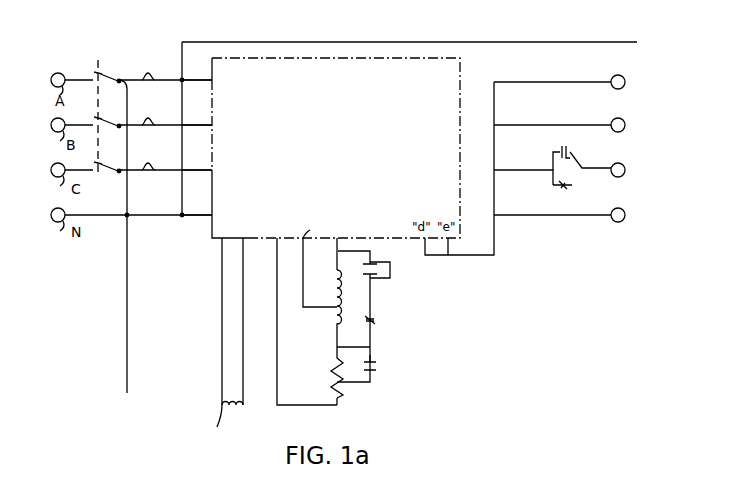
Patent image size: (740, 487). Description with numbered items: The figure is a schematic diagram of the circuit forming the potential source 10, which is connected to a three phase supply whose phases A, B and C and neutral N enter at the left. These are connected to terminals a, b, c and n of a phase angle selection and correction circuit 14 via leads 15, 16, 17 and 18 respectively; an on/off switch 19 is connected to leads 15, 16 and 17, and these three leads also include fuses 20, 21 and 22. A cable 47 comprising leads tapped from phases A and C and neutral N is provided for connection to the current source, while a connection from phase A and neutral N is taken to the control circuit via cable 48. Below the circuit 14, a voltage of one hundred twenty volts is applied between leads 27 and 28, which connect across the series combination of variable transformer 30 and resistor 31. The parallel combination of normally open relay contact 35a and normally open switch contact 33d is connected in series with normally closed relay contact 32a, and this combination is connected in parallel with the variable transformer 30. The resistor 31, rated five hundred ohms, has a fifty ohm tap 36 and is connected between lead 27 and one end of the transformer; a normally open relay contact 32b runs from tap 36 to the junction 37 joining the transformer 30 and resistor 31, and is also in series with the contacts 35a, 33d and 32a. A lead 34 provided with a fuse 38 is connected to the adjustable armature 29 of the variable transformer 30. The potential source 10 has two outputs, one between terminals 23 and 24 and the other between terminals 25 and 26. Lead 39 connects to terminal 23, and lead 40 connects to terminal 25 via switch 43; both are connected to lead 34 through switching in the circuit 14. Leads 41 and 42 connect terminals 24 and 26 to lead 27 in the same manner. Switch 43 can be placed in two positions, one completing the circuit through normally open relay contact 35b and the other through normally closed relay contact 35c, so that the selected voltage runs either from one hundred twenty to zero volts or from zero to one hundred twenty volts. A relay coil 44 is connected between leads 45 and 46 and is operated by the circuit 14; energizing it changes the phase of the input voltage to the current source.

The potential source 10 is at (579, 345).
The phase angle selection and correction circuit 14 is at (462, 74).
The lead 15 is at (192, 78).
The lead 16 is at (192, 123).
The lead 17 is at (192, 168).
The lead 18 is at (192, 213).
The on/off switch 19 is at (101, 72).
The fuse 20 is at (151, 73).
The fuse 21 is at (150, 118).
The fuse 22 is at (151, 163).
The terminal 23 is at (624, 78).
The terminal 24 is at (624, 121).
The terminal 25 is at (624, 166).
The terminal 26 is at (623, 220).
The lead 27 is at (277, 240).
The lead 28 is at (340, 238).
The adjustable armature 29 is at (326, 310).
The variable transformer 30 is at (343, 305).
The resistor 31 is at (335, 381).
The normally closed relay contact 32a is at (376, 322).
The normally open relay contact 32b is at (378, 366).
The normally open switch contact 33d is at (391, 280).
The lead 34 is at (315, 225).
The normally open relay contact 35a is at (378, 262).
The normally open relay contact 35b is at (575, 146).
The normally closed relay contact 35c is at (565, 191).
The tap 36 is at (345, 386).
The junction 37 is at (336, 347).
The fuse 38 is at (303, 270).
The lead 39 is at (576, 80).
The lead 40 is at (543, 166).
The lead 41 is at (561, 123).
The lead 42 is at (547, 212).
The switch 43 is at (585, 163).
The relay coil 44 is at (225, 425).
The lead 45 is at (221, 294).
The lead 46 is at (243, 291).
The cable 47 is at (128, 291).
The cable 48 is at (547, 42).